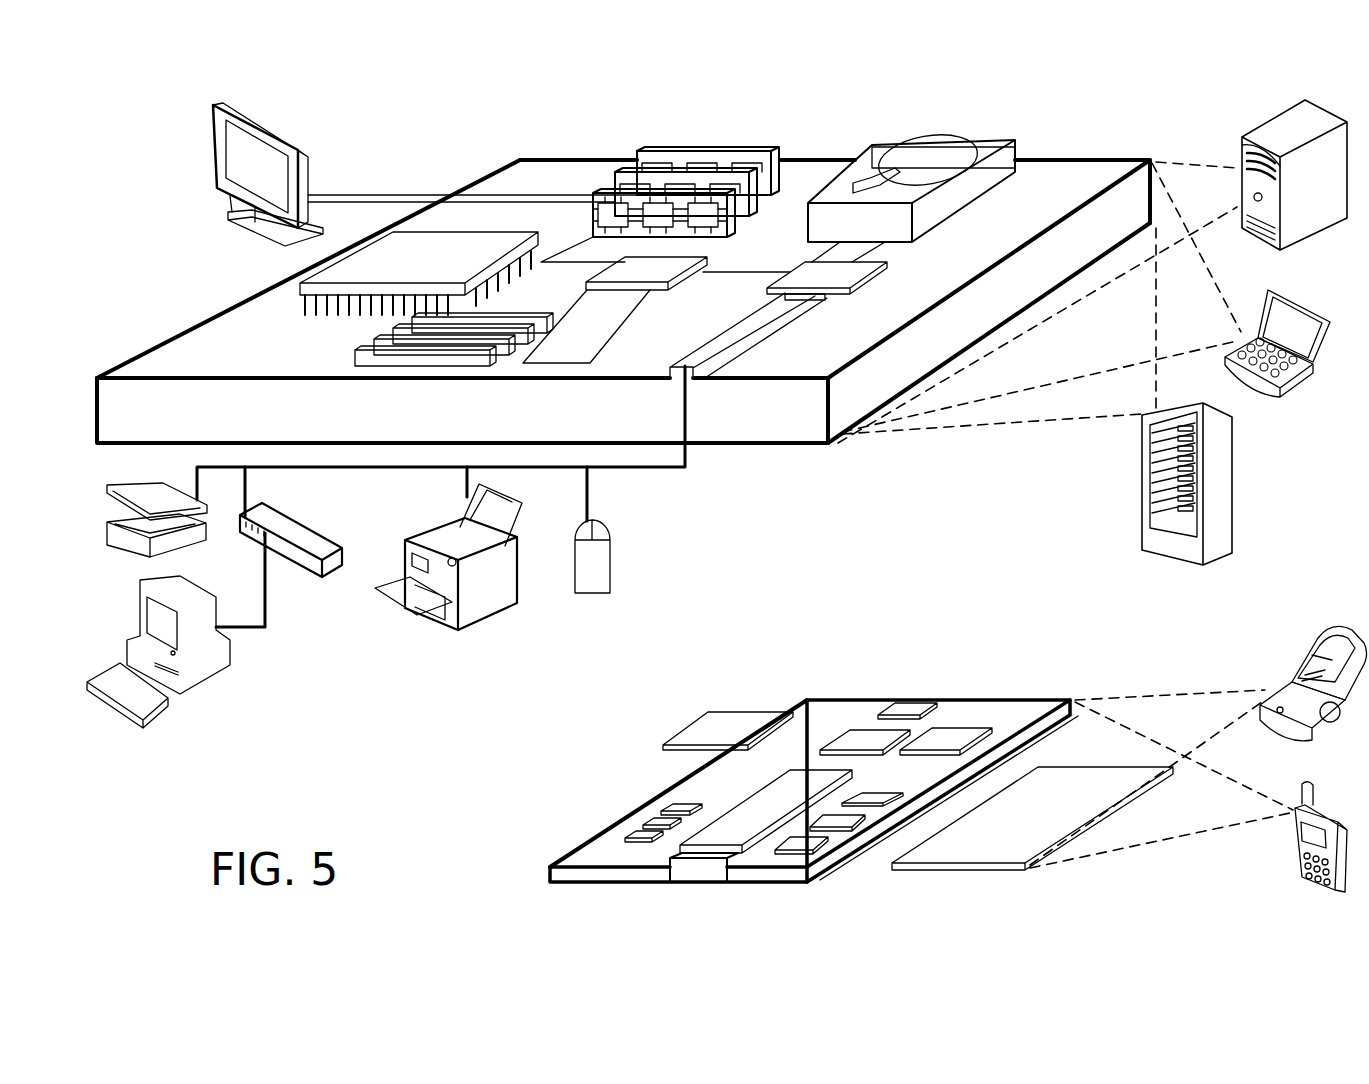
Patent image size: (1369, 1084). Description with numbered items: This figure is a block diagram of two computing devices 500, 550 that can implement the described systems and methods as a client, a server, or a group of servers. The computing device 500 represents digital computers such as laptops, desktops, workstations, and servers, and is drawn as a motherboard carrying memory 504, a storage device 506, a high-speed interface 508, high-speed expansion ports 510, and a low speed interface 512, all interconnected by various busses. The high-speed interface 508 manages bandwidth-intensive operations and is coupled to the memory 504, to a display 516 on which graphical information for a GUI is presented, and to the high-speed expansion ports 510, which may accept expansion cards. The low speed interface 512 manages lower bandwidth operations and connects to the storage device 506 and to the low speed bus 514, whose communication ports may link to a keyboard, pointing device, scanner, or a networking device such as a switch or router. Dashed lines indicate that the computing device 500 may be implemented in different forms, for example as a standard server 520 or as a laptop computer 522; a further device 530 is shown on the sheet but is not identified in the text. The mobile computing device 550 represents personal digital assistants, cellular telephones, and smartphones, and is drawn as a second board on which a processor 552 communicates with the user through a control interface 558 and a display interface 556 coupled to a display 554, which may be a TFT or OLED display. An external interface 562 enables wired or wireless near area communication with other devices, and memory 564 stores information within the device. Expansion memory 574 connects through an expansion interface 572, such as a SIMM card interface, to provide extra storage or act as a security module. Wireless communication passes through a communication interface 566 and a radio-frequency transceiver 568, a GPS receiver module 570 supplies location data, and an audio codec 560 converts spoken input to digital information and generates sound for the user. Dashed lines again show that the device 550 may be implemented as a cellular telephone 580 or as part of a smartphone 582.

The computing device 500 is at (402, 90).
The memory 504 is at (688, 152).
The storage device 506 is at (880, 160).
The high-speed interface 508 is at (660, 268).
The high-speed expansion ports 510 is at (1292, 292).
The low speed interface 512 is at (807, 275).
The low speed bus 514 is at (718, 380).
The display 516 is at (298, 286).
The standard server 520 is at (1262, 135).
The laptop computer 522 is at (375, 343).
The server rack 530 is at (1142, 517).
The computing device 550 is at (558, 912).
The processor 552 is at (740, 810).
The display 554 is at (995, 845).
The display interface 556 is at (793, 850).
The control interface 558 is at (830, 830).
The audio codec 560 is at (953, 774).
The external interface 562 is at (690, 870).
The memory 564 is at (640, 834).
The communication interface 566 is at (860, 740).
The transceiver 568 is at (955, 740).
The GPS receiver module 570 is at (925, 712).
The expansion interface 572 is at (793, 700).
The expansion memory 574 is at (685, 737).
The cellular telephone 580 is at (1312, 651).
The smartphone 582 is at (1298, 852).